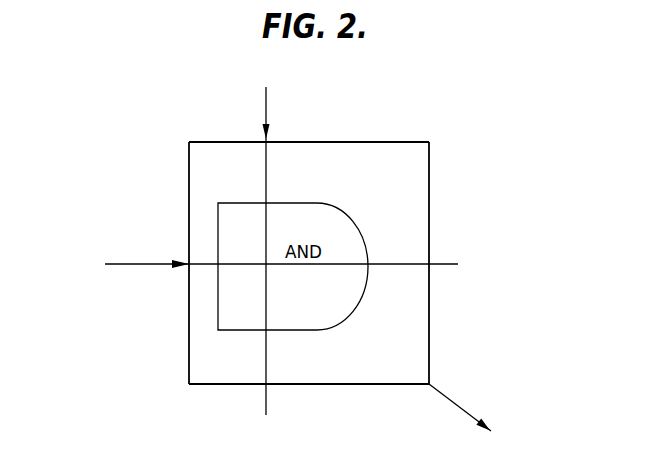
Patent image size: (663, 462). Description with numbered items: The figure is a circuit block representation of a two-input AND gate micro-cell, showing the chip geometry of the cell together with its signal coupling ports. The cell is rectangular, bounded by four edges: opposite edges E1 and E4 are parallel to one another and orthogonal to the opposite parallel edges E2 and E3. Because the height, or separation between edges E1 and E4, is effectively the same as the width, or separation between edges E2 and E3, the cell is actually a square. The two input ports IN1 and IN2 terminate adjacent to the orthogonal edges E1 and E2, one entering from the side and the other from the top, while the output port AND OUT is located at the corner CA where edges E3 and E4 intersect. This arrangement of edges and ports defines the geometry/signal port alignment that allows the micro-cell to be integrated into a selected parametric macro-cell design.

The edge E1 is at (355, 142).
The edge E2 is at (189, 212).
The edge E3 is at (430, 217).
The edge E4 is at (307, 386).
The corner CA is at (429, 384).
The input port IN1 is at (281, 254).
The input port IN2 is at (287, 251).
The output port AND OUT is at (458, 408).